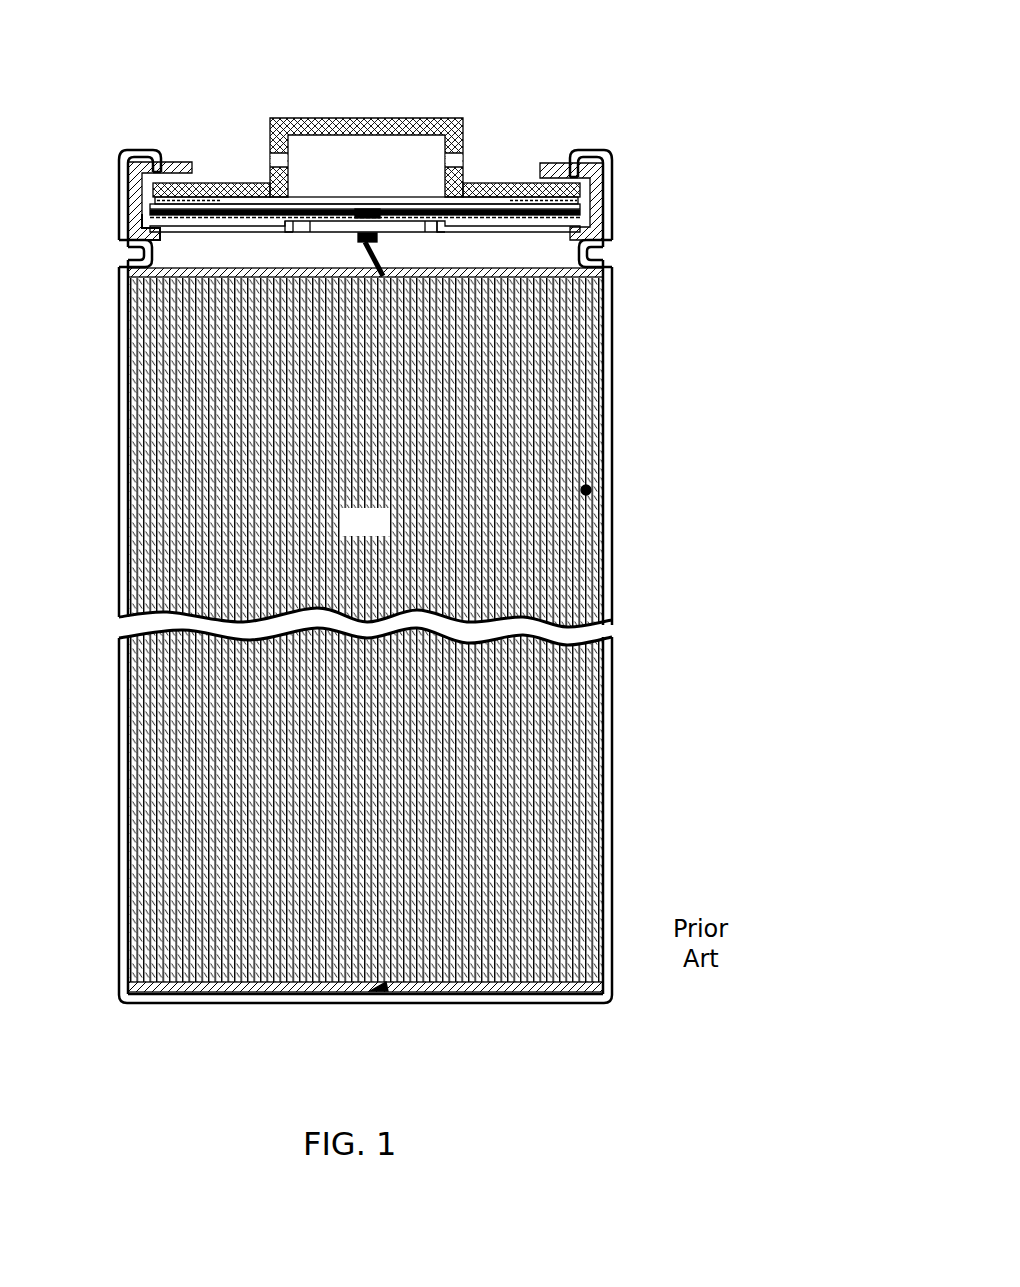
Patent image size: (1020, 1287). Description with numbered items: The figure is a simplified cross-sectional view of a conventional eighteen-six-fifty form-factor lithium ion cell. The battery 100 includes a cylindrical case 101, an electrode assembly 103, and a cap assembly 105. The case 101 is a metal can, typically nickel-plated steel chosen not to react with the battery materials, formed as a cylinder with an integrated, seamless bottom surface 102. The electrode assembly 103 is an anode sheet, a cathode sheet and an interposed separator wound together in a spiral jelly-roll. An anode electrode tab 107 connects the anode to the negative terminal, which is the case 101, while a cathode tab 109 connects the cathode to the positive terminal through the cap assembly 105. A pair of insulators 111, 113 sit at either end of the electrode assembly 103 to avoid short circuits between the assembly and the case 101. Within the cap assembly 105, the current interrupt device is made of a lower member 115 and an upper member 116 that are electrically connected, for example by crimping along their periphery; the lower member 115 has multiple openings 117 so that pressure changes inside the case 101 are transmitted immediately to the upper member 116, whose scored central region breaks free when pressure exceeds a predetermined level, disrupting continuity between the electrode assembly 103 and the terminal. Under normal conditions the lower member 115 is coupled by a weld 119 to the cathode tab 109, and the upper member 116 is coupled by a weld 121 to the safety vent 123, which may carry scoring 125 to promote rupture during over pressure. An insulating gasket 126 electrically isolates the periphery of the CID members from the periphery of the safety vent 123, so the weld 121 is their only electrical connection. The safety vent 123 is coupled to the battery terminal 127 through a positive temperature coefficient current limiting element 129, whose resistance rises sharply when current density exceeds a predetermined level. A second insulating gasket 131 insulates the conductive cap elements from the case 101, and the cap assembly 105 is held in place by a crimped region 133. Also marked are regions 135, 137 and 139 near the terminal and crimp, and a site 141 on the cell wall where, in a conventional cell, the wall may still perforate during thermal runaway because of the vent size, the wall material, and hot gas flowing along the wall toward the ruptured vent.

The battery 100 is at (443, 543).
The cylindrical case 101 is at (373, 543).
The bottom surface 102 is at (365, 1029).
The electrode assembly 103 is at (386, 534).
The cap assembly 105 is at (373, 143).
The anode electrode tab 107 is at (388, 993).
The cathode tab 109 is at (360, 238).
The insulator 111 is at (553, 991).
The insulator 113 is at (152, 272).
The lower CID member 115 is at (497, 224).
The upper CID member 116 is at (436, 223).
The openings 117 is at (309, 220).
The weld 119 is at (357, 237).
The weld 121 is at (397, 217).
The safety vent 123 is at (480, 188).
The scoring 125 is at (400, 199).
The insulating gasket 126 is at (147, 215).
The battery terminal 127 is at (325, 117).
The positive temperature coefficient current limiting element 129 is at (582, 183).
The second insulating gasket 131 is at (138, 186).
The crimped region 133 is at (623, 251).
The terminal cavity 135 is at (386, 159).
The crimp 137 is at (146, 140).
The crimp gap 139 is at (173, 157).
The site 141 is at (586, 486).